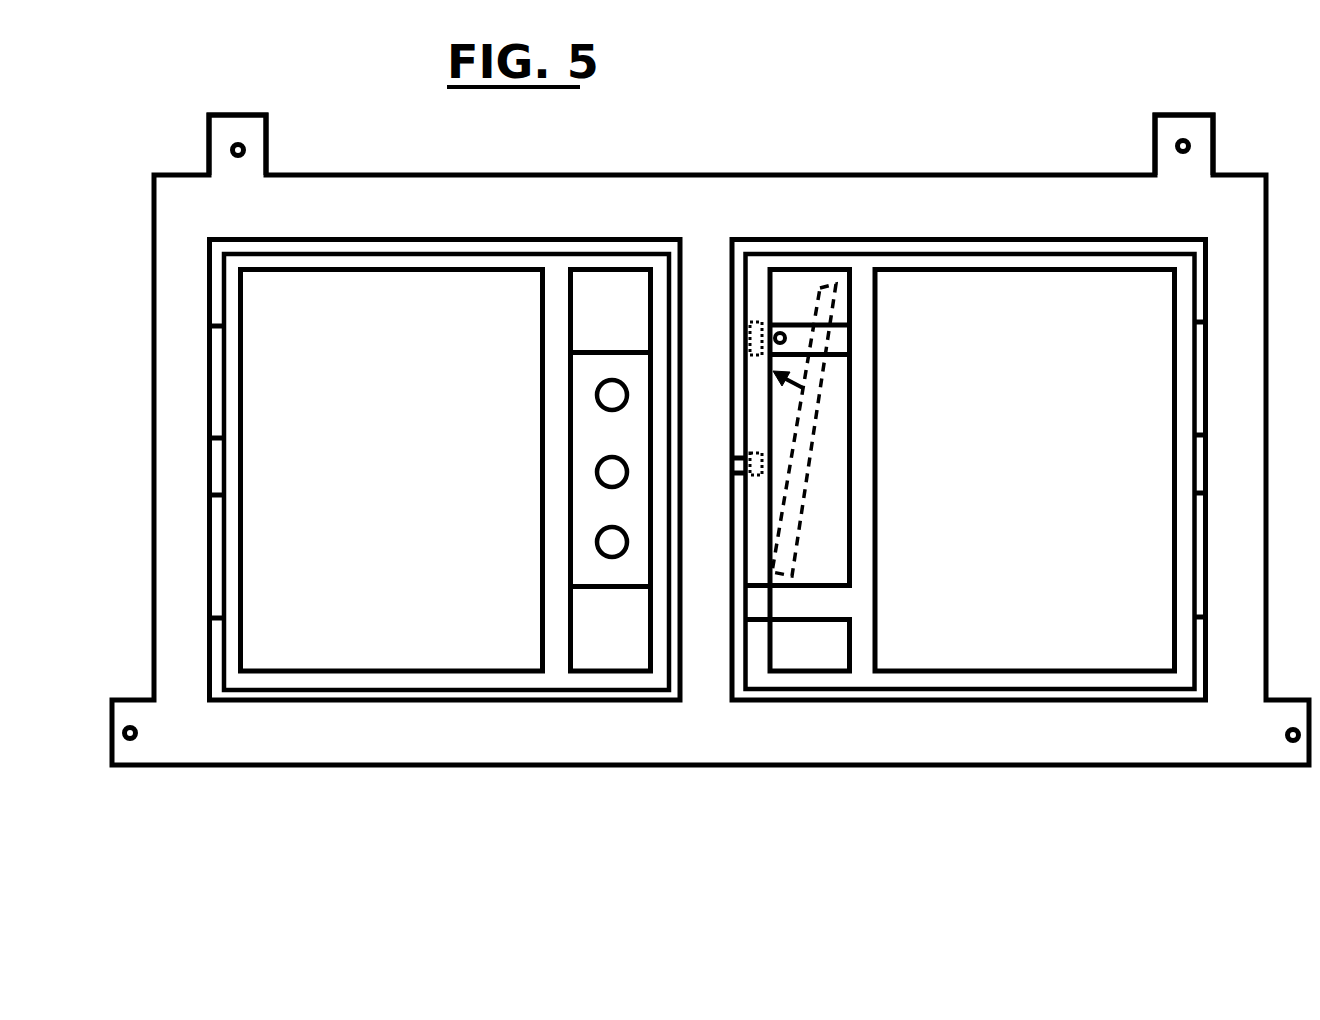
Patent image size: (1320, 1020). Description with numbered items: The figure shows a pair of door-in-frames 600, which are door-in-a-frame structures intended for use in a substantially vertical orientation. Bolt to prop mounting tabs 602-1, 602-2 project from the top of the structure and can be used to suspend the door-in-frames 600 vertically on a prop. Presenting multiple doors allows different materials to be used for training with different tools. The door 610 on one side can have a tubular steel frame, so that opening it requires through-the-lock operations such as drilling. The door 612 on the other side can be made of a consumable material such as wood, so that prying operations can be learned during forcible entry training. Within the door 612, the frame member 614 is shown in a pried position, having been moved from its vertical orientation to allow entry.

The door-in-frames 600 is at (747, 150).
The bolt to prop mounting tab 602-1 is at (268, 135).
The bolt to prop mounting tab 602-2 is at (1153, 139).
The door 610 is at (358, 620).
The door 612 is at (1042, 620).
The frame member 614 is at (822, 453).